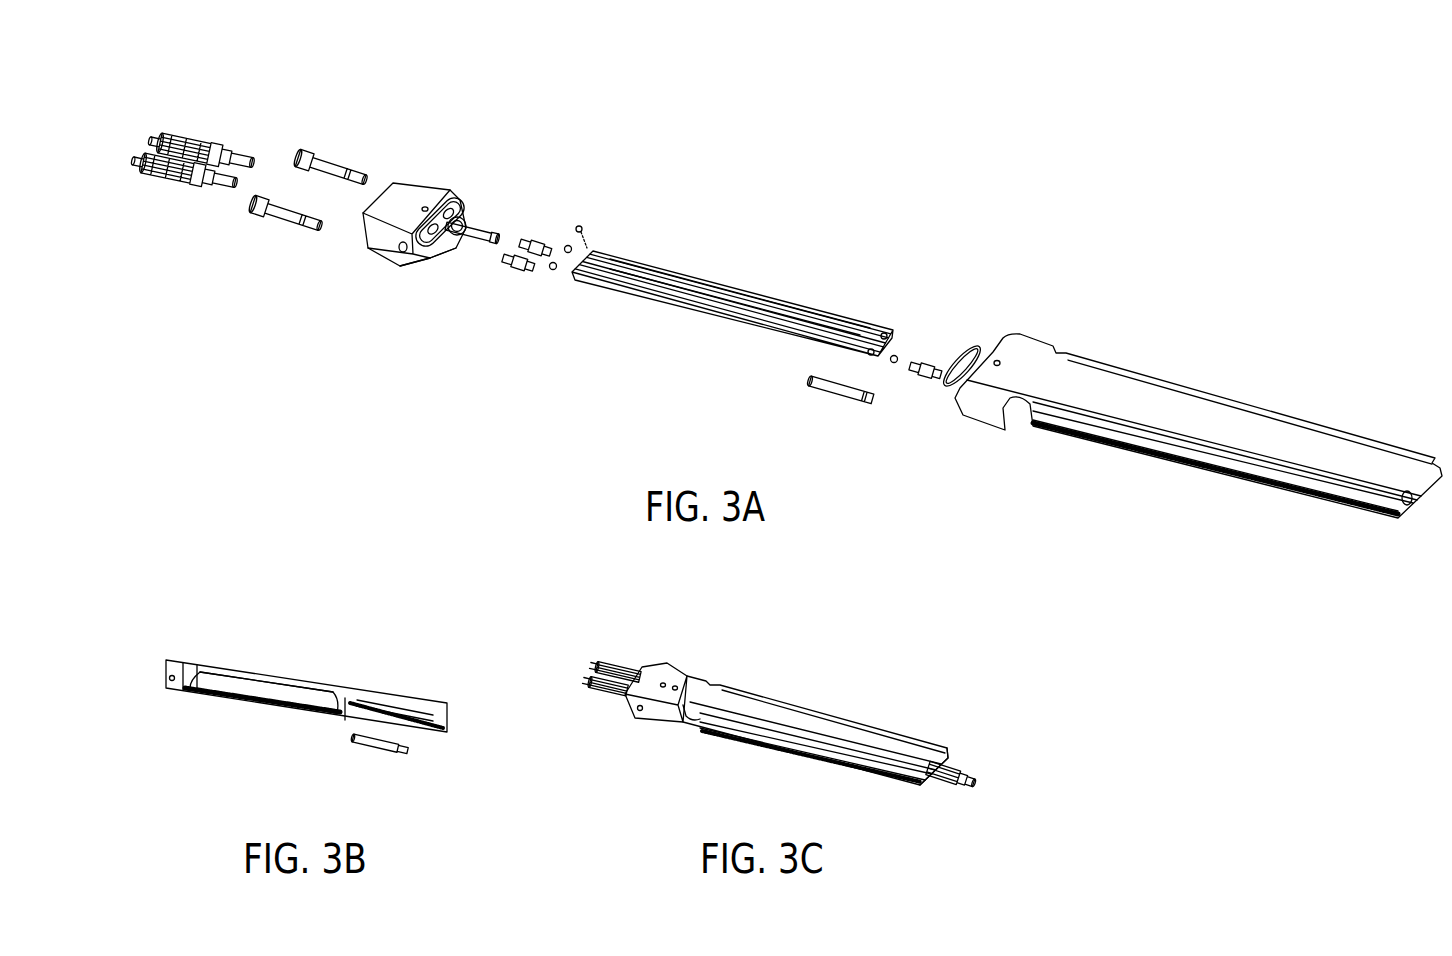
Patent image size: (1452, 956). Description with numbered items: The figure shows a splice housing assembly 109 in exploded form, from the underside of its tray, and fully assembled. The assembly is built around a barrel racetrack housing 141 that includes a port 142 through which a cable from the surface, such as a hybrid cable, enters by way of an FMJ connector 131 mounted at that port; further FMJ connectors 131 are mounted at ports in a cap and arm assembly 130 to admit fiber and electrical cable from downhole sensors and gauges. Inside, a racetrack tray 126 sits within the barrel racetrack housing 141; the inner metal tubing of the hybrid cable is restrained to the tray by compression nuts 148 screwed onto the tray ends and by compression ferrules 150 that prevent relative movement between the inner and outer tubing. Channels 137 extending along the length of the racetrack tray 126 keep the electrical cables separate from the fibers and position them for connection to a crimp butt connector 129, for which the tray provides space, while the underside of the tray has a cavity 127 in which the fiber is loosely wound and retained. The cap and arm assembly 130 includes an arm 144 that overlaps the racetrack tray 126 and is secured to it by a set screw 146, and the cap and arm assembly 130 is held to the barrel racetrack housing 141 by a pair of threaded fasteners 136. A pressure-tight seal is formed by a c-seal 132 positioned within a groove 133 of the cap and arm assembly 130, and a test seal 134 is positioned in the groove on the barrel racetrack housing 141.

In FIG. 3A, the splice housing assembly 109 is at (1195, 194).
In FIG. 3A, the racetrack tray 126 is at (690, 288).
In FIG. 3B, the racetrack tray 126 is at (285, 664).
In FIG. 3B, the cavity 127 is at (259, 692).
In FIG. 3A, the crimp butt connector 129 is at (838, 393).
In FIG. 3B, the crimp butt connector 129 is at (392, 750).
In FIG. 3A, the cap and arm assembly 130 is at (418, 192).
In FIG. 3C, the cap and arm assembly 130 is at (658, 678).
In FIG. 3A, the FMJ connector 131 is at (248, 156).
In FIG. 3C, the FMJ connector 131 is at (627, 667).
In FIG. 3A, the c-seal 132 is at (436, 256).
In FIG. 3A, the groove 133 is at (461, 203).
In FIG. 3A, the test seal 134 is at (950, 368).
In FIG. 3A, the threaded fasteners 136 is at (297, 211).
In FIG. 3C, the threaded fasteners 136 is at (622, 703).
In FIG. 3A, the channels 137 is at (763, 303).
In FIG. 3A, the barrel racetrack housing 141 is at (1147, 392).
In FIG. 3C, the barrel racetrack housing 141 is at (827, 728).
In FIG. 3A, the port 142 is at (1412, 506).
In FIG. 3C, the port 142 is at (937, 747).
In FIG. 3A, the arm 144 is at (488, 234).
In FIG. 3A, the set screw 146 is at (583, 228).
In FIG. 3A, the compression nuts 148 is at (521, 242).
In FIG. 3A, the compression ferrules 150 is at (556, 262).